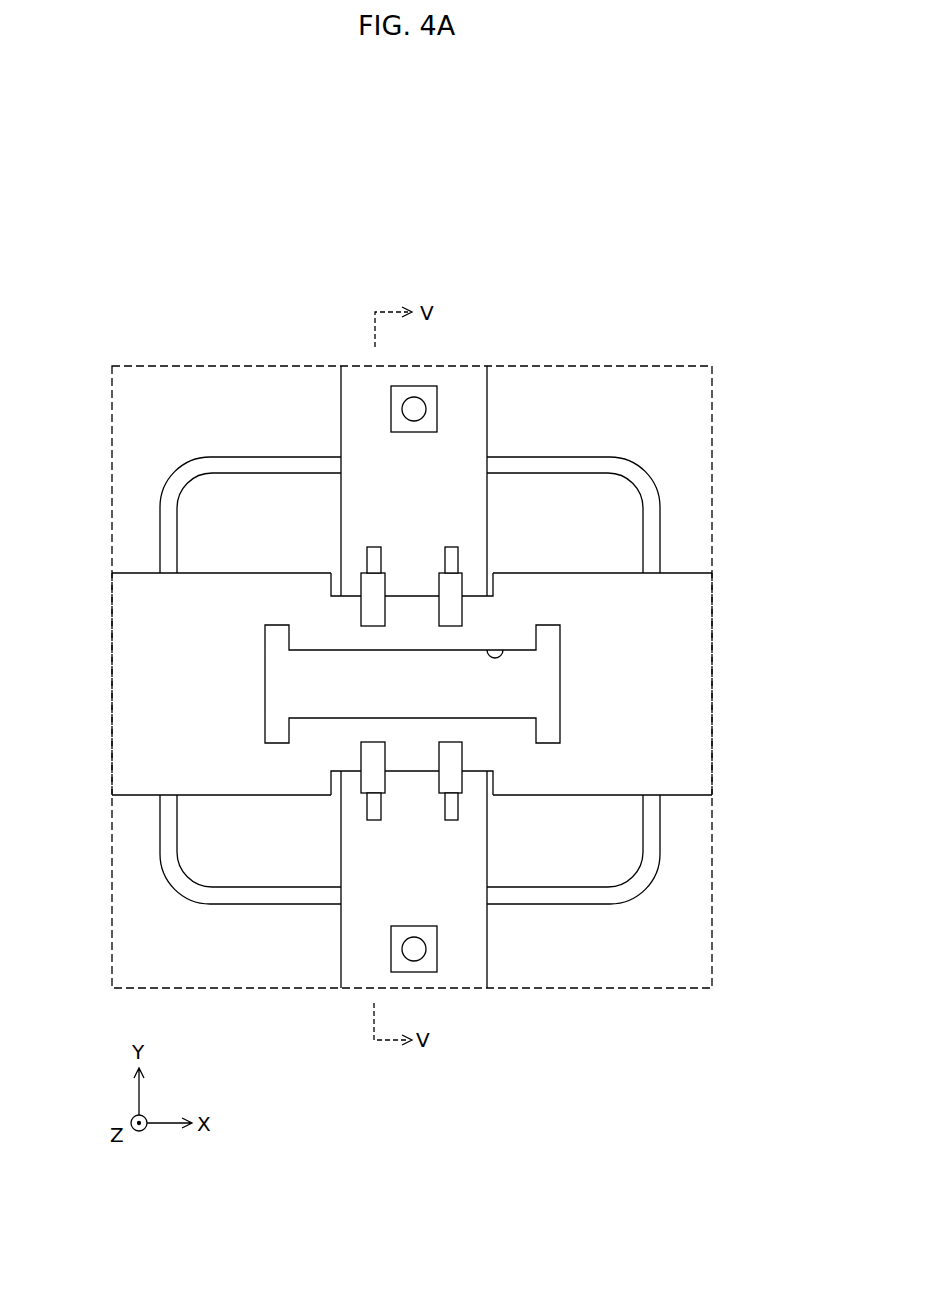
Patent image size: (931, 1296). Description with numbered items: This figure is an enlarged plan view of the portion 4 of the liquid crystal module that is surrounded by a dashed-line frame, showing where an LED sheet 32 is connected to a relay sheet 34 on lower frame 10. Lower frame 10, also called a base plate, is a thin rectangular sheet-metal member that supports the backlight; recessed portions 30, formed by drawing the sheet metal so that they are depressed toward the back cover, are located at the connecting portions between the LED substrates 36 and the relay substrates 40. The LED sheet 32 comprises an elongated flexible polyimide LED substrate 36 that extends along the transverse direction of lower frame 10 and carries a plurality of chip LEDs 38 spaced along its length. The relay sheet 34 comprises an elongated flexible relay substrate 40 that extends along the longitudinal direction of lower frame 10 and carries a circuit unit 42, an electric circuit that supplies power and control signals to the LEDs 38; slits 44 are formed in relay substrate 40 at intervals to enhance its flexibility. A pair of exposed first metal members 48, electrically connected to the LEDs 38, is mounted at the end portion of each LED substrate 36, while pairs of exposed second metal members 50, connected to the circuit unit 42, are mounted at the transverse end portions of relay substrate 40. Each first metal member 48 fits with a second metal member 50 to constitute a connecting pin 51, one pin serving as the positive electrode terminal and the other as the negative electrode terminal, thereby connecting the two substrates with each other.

The semiconductor module 4 is at (668, 341).
The lower frame 10 is at (683, 403).
The recessed portion 30 is at (620, 515).
The LED sheet 32 is at (469, 392).
The relay sheet 34 is at (681, 657).
The LED substrate 36 is at (352, 417).
The LED 38 is at (437, 409).
The relay substrate 40 is at (685, 722).
The circuit unit 42 is at (138, 702).
The slit 44 is at (496, 657).
The first metal member 48 is at (452, 547).
The second metal member 50 is at (375, 627).
The connecting pin 51 is at (432, 580).